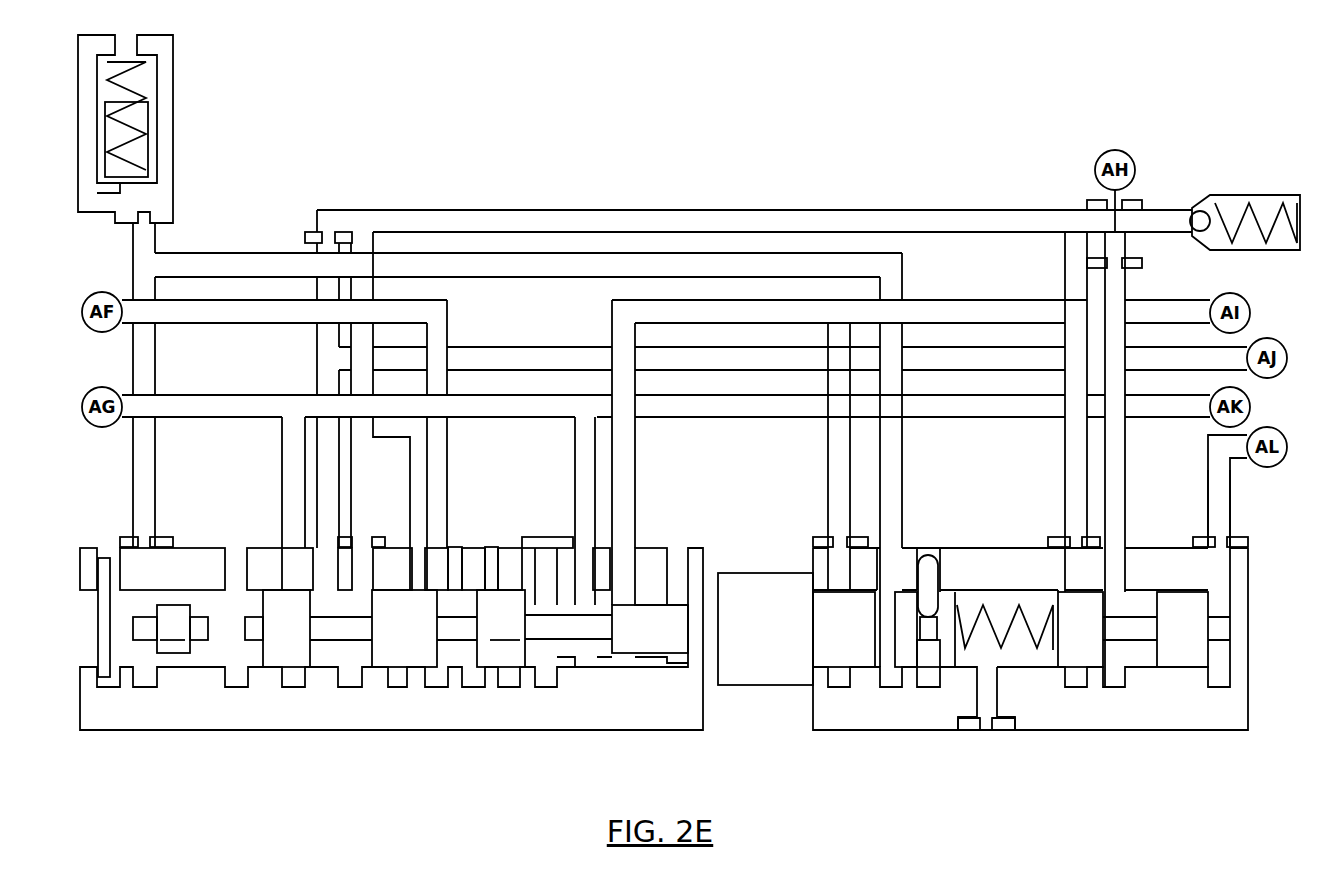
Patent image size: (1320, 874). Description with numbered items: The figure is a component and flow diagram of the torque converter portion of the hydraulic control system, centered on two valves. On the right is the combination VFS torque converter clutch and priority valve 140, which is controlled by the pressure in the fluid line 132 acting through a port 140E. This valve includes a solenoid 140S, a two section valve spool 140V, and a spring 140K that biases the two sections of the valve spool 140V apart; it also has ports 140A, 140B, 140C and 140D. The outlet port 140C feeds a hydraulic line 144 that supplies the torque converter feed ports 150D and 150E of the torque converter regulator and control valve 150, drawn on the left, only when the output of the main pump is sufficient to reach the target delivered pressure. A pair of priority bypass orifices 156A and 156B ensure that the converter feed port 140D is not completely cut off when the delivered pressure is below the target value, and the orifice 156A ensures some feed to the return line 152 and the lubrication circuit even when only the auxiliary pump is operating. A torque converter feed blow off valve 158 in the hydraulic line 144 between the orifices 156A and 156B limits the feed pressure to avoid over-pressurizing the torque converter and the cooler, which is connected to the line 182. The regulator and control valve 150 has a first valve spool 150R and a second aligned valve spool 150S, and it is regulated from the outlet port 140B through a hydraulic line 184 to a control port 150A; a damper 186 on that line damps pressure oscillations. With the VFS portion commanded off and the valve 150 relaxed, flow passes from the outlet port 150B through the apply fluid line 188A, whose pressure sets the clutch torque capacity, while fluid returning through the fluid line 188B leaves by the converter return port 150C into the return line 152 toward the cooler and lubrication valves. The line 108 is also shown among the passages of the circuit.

The damper 186 is at (130, 150).
The fluid line 188B is at (188, 318).
The fluid line 188A is at (238, 407).
The hydraulic line 184 is at (512, 262).
The hydraulic line 144 is at (708, 220).
The priority bypass orifice 156A is at (1112, 197).
The priority bypass orifice 156B is at (1110, 272).
The torque converter feed blow off valve 158 is at (1254, 200).
The fluid line 108 is at (946, 310).
The return line 152 is at (517, 360).
The line 182 is at (695, 407).
The torque converter regulator and control valve 150 is at (380, 629).
The control port 150A is at (140, 545).
The outlet port 150B is at (295, 545).
The converter return port 150C is at (328, 545).
The torque converter feed port 150D is at (398, 545).
The torque converter feed port 150E is at (400, 548).
The first valve spool 150R is at (178, 640).
The second aligned valve spool 150S is at (507, 640).
The VFS torque converter clutch and priority valve 140 is at (1013, 637).
The solenoid 140S is at (765, 629).
The valve port 140A is at (838, 545).
The outlet port 140B is at (890, 548).
The outlet port 140C is at (1070, 545).
The converter feed port 140D is at (1115, 548).
The port 140E is at (1220, 545).
The spring 140K is at (990, 605).
The two section valve spool 140V is at (910, 655).
The fluid line 132 is at (1220, 505).